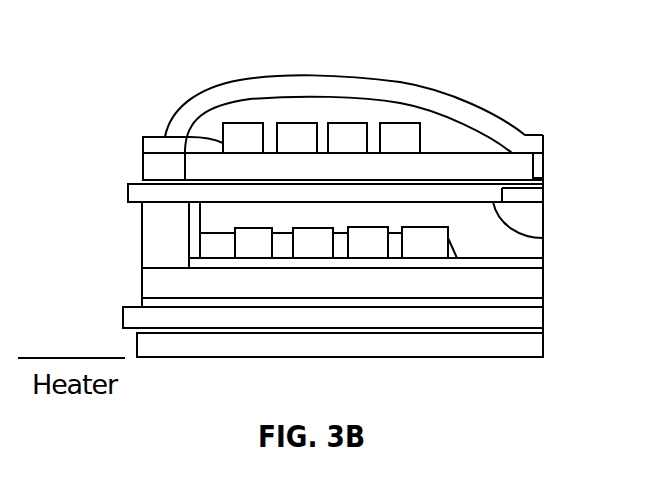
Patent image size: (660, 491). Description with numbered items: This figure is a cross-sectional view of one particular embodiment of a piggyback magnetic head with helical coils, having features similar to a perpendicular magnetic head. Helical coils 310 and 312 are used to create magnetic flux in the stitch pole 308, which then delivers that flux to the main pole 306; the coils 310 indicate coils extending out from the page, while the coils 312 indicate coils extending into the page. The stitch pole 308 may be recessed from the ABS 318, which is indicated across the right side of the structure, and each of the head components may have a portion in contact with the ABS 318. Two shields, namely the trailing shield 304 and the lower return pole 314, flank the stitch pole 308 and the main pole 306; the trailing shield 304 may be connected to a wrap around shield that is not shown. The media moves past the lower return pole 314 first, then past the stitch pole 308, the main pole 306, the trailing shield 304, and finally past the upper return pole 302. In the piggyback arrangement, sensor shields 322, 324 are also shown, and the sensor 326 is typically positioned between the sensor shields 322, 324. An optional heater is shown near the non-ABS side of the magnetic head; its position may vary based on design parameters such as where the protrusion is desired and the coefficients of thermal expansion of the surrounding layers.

The upper return pole 302 is at (478, 108).
The trailing shield 304 is at (545, 168).
The main pole 306 is at (545, 193).
The stitch pole 308 is at (543, 238).
The helical coils 310 is at (167, 136).
The helical coils 312 is at (237, 228).
The lower return pole 314 is at (378, 293).
The ABS 318 is at (556, 273).
The sensor shield 322 is at (123, 324).
The sensor shield 324 is at (137, 345).
The sensor 326 is at (530, 331).